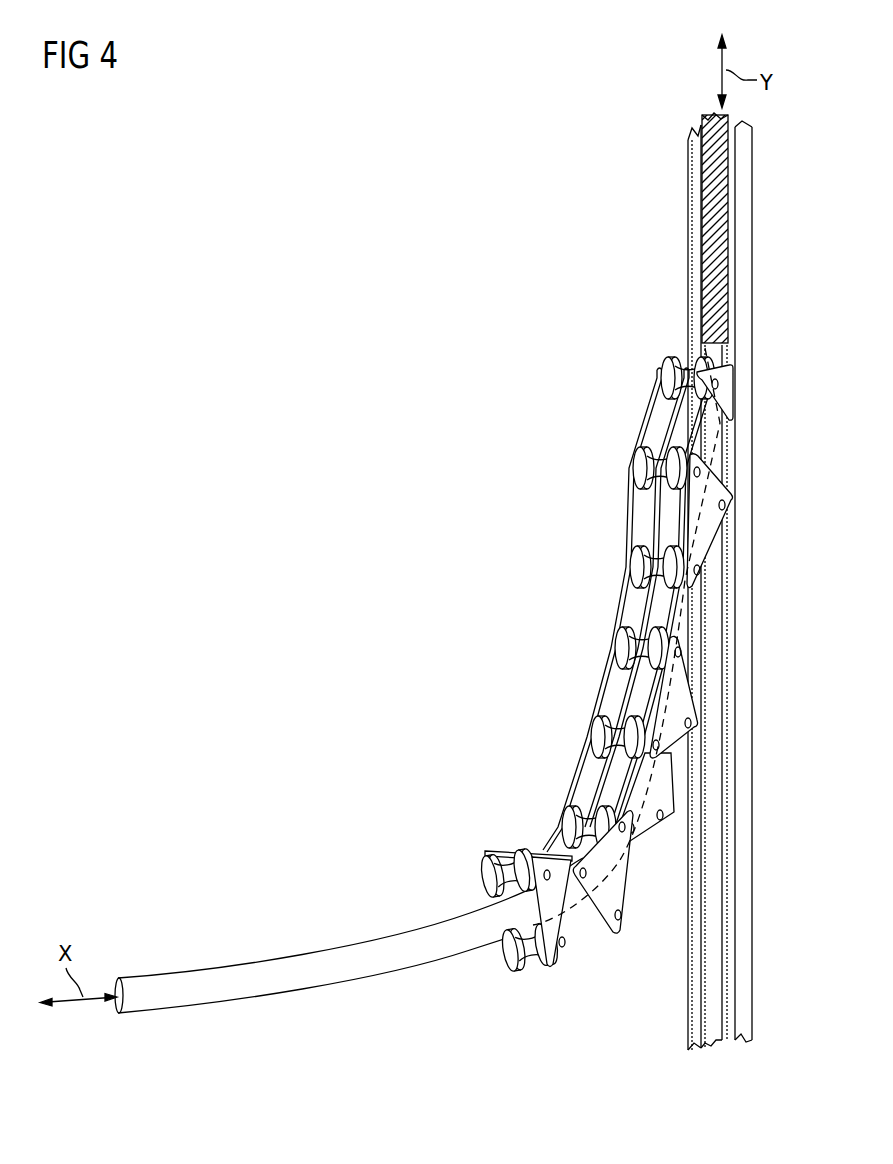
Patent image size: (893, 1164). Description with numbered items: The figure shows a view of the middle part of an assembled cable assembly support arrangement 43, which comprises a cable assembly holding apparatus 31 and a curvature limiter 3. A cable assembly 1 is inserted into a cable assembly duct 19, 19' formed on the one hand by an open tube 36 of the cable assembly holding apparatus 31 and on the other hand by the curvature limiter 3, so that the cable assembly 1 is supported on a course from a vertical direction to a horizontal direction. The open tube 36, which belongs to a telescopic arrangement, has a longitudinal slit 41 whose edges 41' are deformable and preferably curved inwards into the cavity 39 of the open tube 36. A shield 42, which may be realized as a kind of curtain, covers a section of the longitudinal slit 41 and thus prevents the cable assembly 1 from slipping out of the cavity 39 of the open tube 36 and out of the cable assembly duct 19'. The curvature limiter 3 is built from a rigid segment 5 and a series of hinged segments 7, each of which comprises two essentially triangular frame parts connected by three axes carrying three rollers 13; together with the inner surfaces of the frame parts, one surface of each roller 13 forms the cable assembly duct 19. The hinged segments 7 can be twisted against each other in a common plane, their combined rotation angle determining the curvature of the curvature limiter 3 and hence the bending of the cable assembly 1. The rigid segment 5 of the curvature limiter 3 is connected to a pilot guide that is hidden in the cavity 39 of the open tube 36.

The cable assembly 1 is at (313, 967).
The curvature limiter 3 is at (610, 660).
The rigid segment 5 is at (712, 400).
The hinged segment 7 is at (703, 622).
The roller 13 is at (650, 480).
The cable assembly duct 19 is at (488, 880).
The cable assembly duct 19' is at (758, 692).
The cable assembly holding apparatus 31 is at (708, 572).
The open tube 36 is at (747, 318).
The cavity 39 is at (718, 970).
The longitudinal slit 41 is at (742, 587).
The edges 41' is at (670, 695).
The shield 42 is at (735, 268).
The cable assembly support arrangement 43 is at (118, 592).